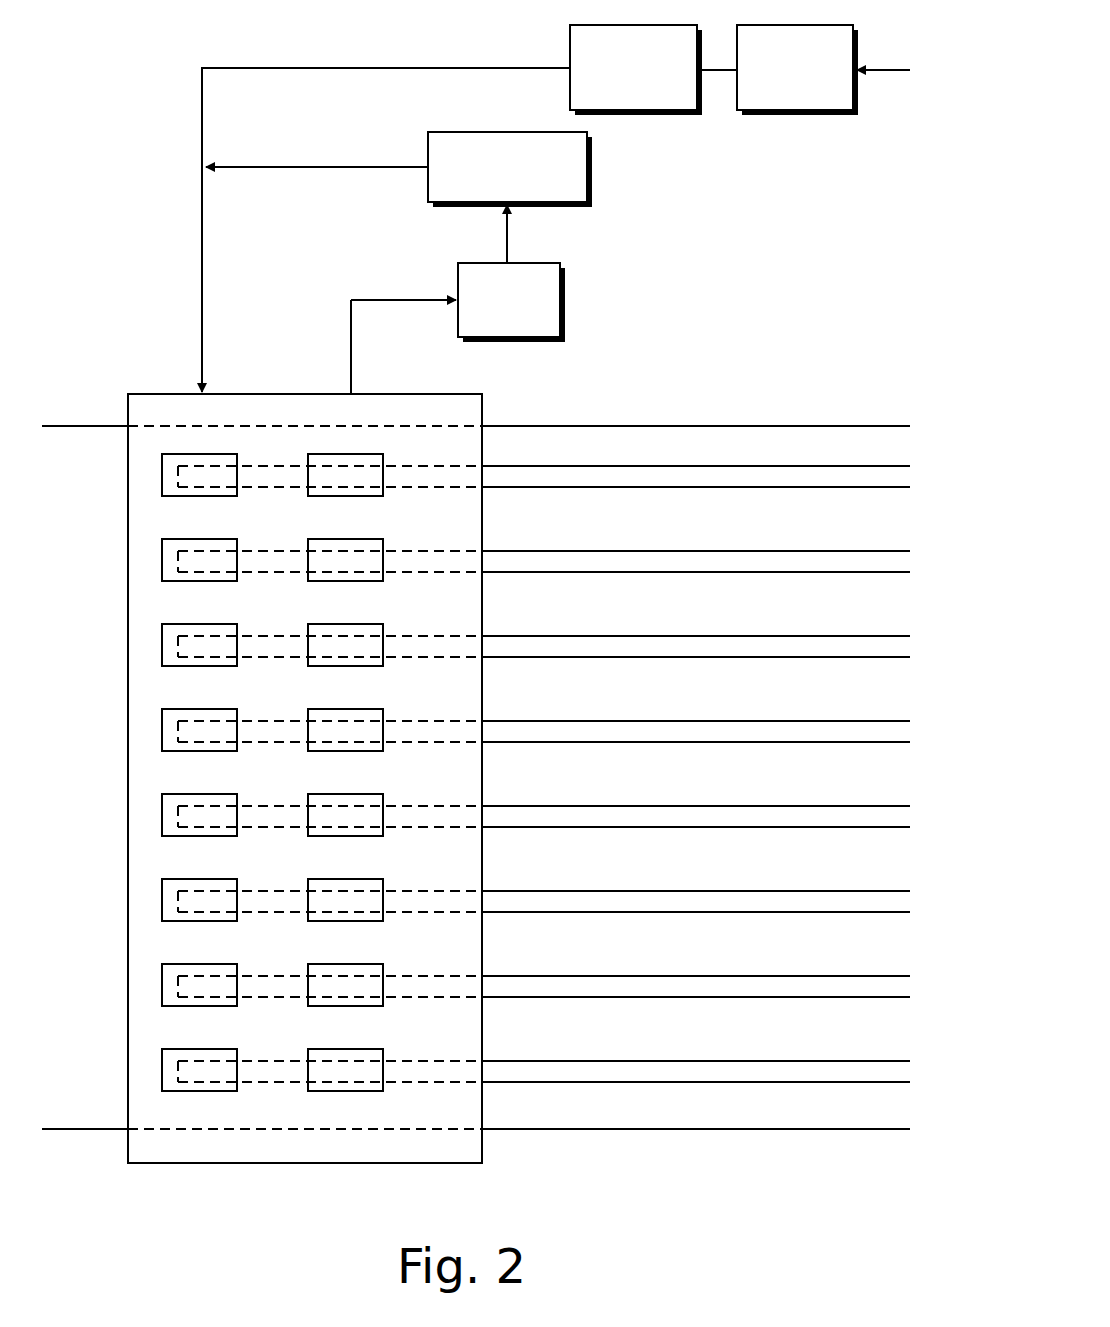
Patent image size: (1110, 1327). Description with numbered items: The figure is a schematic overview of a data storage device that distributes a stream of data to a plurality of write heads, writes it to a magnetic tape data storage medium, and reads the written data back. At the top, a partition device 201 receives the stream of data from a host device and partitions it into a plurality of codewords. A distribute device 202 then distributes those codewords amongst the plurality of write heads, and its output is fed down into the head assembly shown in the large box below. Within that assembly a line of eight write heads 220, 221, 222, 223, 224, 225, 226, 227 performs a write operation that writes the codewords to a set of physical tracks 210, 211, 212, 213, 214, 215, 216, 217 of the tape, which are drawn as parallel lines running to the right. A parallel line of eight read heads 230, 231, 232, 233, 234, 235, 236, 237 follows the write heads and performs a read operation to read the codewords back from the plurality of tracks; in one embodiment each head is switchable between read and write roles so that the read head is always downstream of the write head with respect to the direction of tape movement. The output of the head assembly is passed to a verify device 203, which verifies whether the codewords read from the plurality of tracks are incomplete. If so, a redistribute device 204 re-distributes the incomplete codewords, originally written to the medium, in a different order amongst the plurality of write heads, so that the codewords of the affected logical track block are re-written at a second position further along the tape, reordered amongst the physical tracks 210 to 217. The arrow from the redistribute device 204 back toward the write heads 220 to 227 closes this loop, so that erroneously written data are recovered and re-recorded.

The partition device 201 is at (797, 57).
The distribute device 202 is at (636, 57).
The verify device 203 is at (502, 289).
The redistribute device 204 is at (510, 156).
The physical track 210 is at (696, 465).
The physical track 211 is at (696, 550).
The physical track 212 is at (696, 635).
The physical track 213 is at (696, 720).
The physical track 214 is at (696, 805).
The physical track 215 is at (696, 890).
The physical track 216 is at (696, 975).
The physical track 217 is at (696, 1060).
The write head 220 is at (322, 463).
The write head 221 is at (322, 548).
The write head 222 is at (322, 633).
The write head 223 is at (322, 718).
The write head 224 is at (322, 803).
The write head 225 is at (322, 888).
The write head 226 is at (322, 973).
The write head 227 is at (322, 1058).
The read head 230 is at (345, 463).
The read head 231 is at (345, 548).
The read head 232 is at (345, 633).
The read head 233 is at (345, 718).
The read head 234 is at (345, 803).
The read head 235 is at (345, 888).
The read head 236 is at (345, 973).
The read head 237 is at (345, 1058).